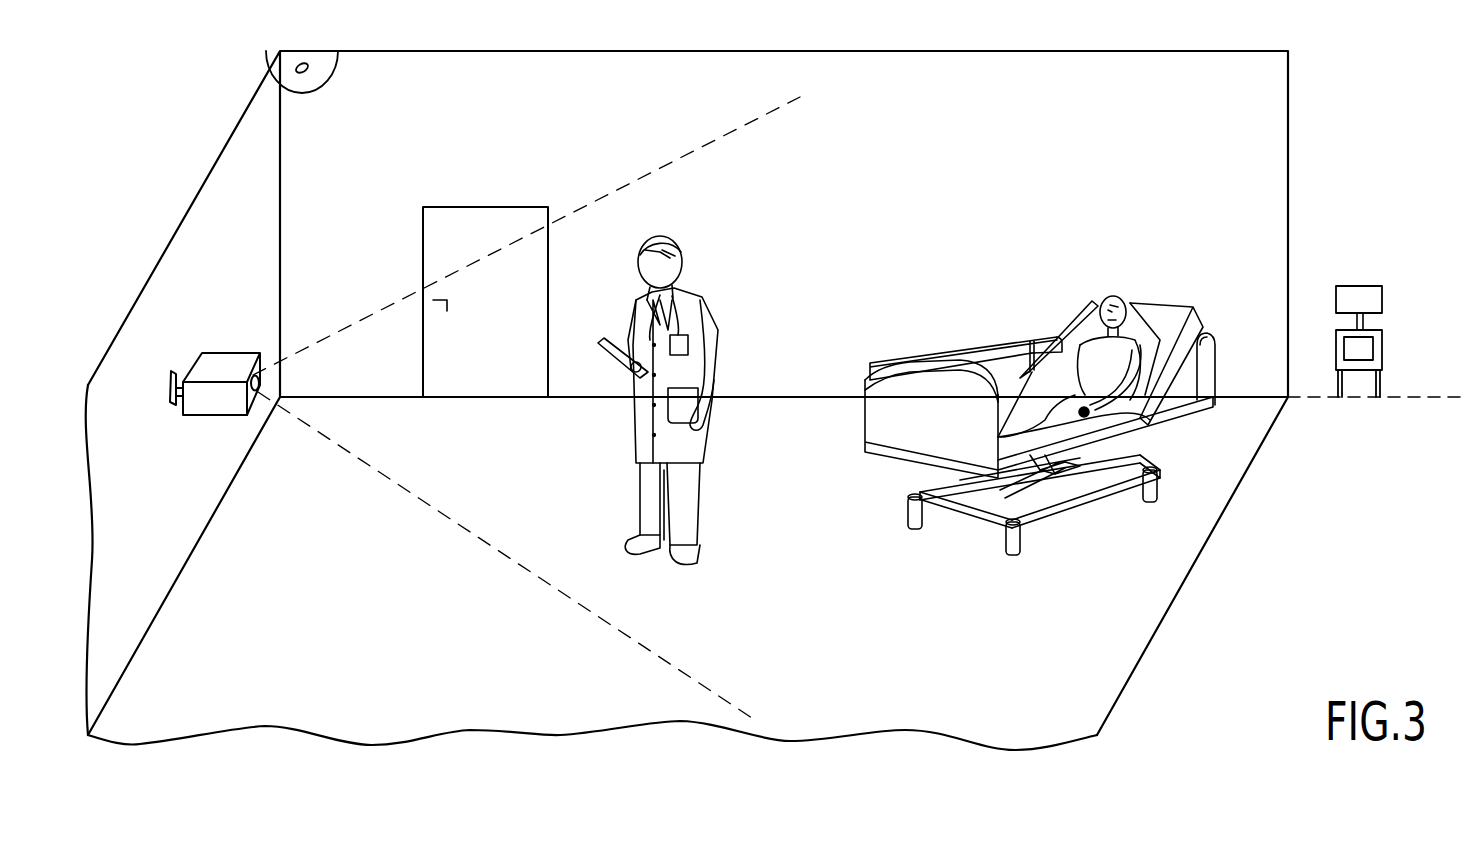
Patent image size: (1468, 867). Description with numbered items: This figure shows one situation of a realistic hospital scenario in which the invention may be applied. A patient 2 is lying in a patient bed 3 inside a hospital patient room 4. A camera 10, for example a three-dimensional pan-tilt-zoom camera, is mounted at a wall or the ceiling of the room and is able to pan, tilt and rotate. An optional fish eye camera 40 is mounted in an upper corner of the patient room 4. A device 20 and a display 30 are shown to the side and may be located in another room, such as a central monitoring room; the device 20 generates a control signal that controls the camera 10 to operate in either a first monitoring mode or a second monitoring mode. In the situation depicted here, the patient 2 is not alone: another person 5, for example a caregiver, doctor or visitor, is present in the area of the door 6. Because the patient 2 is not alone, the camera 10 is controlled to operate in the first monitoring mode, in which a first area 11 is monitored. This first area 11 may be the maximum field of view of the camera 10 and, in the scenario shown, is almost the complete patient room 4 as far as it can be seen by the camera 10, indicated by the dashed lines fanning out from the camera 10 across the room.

The patient 2 is at (1120, 294).
The patient bed 3 is at (980, 346).
The patient room 4 is at (905, 50).
The other person 5 is at (718, 316).
The door 6 is at (513, 207).
The camera 10 is at (240, 352).
The first area 11 is at (646, 172).
The device 20 is at (1374, 347).
The display 30 is at (1383, 297).
The fish eye camera 40 is at (322, 82).